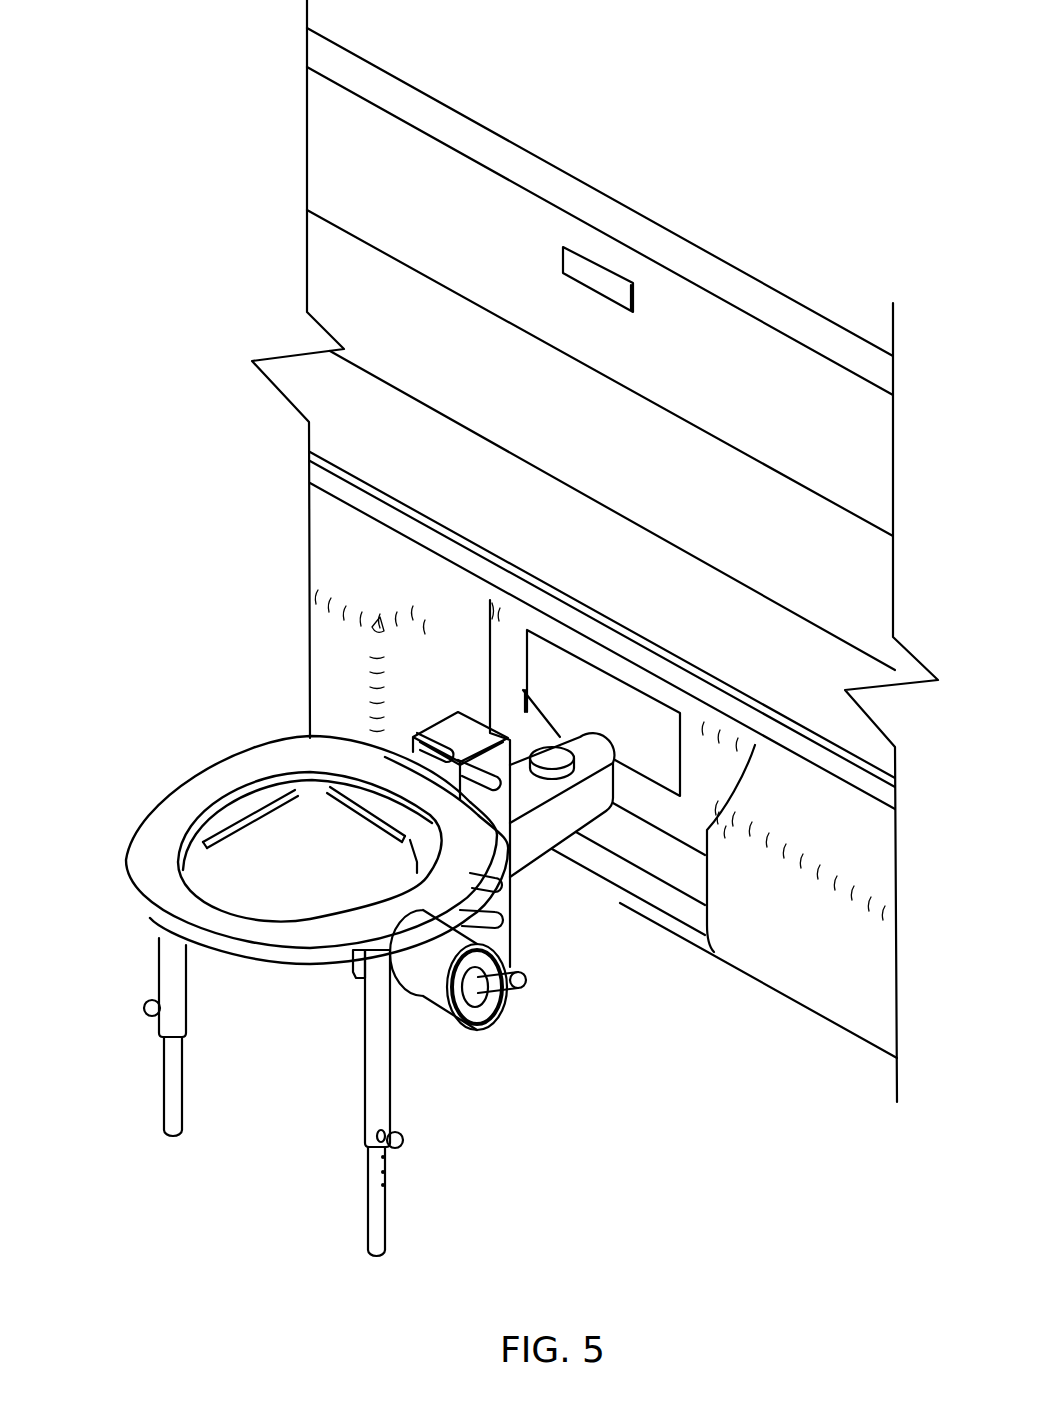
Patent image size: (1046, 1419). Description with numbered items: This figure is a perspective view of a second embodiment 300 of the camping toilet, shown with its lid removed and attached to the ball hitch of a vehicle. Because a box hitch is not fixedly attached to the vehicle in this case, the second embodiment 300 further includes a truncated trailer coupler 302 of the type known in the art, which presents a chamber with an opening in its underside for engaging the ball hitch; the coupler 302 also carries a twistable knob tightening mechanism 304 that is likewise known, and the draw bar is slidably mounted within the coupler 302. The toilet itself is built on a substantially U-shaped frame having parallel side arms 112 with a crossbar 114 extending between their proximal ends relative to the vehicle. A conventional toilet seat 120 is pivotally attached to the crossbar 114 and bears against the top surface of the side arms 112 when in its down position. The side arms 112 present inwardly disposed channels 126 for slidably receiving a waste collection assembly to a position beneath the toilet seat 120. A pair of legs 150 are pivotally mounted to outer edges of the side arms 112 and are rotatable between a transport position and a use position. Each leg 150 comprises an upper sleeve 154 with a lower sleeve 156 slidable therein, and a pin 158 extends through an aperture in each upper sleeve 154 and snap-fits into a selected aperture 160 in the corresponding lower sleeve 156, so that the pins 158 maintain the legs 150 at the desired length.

The second embodiment of the camping toilet 300 is at (190, 608).
The truncated trailer coupler 302 is at (538, 840).
The twistable knob tightening mechanism 304 is at (554, 750).
The toilet seat 120 is at (167, 827).
The side arms 112 is at (260, 810).
The crossbar 114 is at (340, 797).
The channels 126 is at (223, 833).
The legs 150 is at (331, 1055).
The upper sleeve 154 is at (158, 953).
The lower sleeve 156 is at (163, 1118).
The pin 158 is at (147, 1007).
The aperture 160 is at (386, 1160).